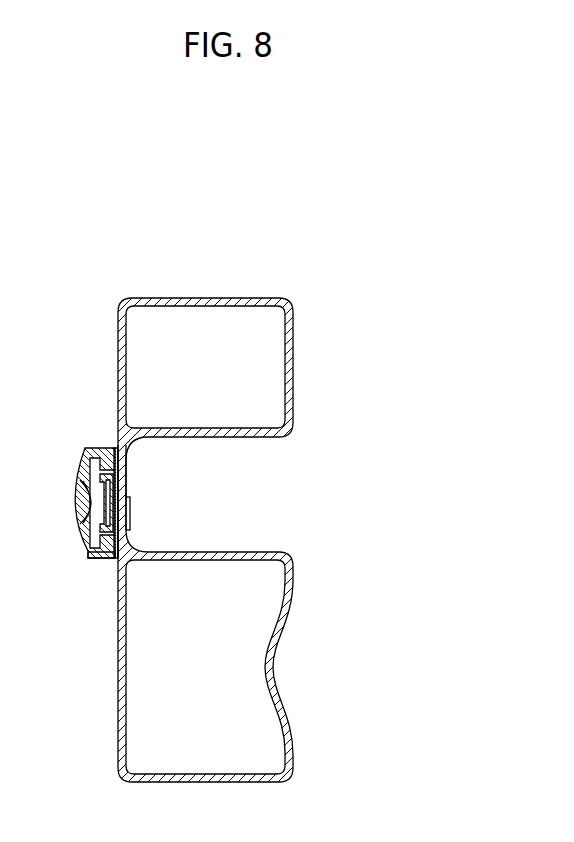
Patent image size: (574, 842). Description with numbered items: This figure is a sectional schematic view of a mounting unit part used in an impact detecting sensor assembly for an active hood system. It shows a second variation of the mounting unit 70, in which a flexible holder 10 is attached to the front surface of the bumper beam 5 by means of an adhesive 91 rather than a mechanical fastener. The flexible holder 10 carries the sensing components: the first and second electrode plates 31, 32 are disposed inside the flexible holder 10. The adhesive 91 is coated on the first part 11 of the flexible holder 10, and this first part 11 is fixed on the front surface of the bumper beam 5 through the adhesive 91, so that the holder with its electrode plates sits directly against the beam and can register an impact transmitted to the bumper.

The bumper beam 5 is at (108, 727).
The flexible holder 10 is at (74, 563).
The first part 11 is at (114, 482).
The first electrode plate 31 is at (112, 508).
The second electrode plate 32 is at (80, 483).
The mounting unit 70 is at (128, 526).
The adhesive 91 is at (106, 560).